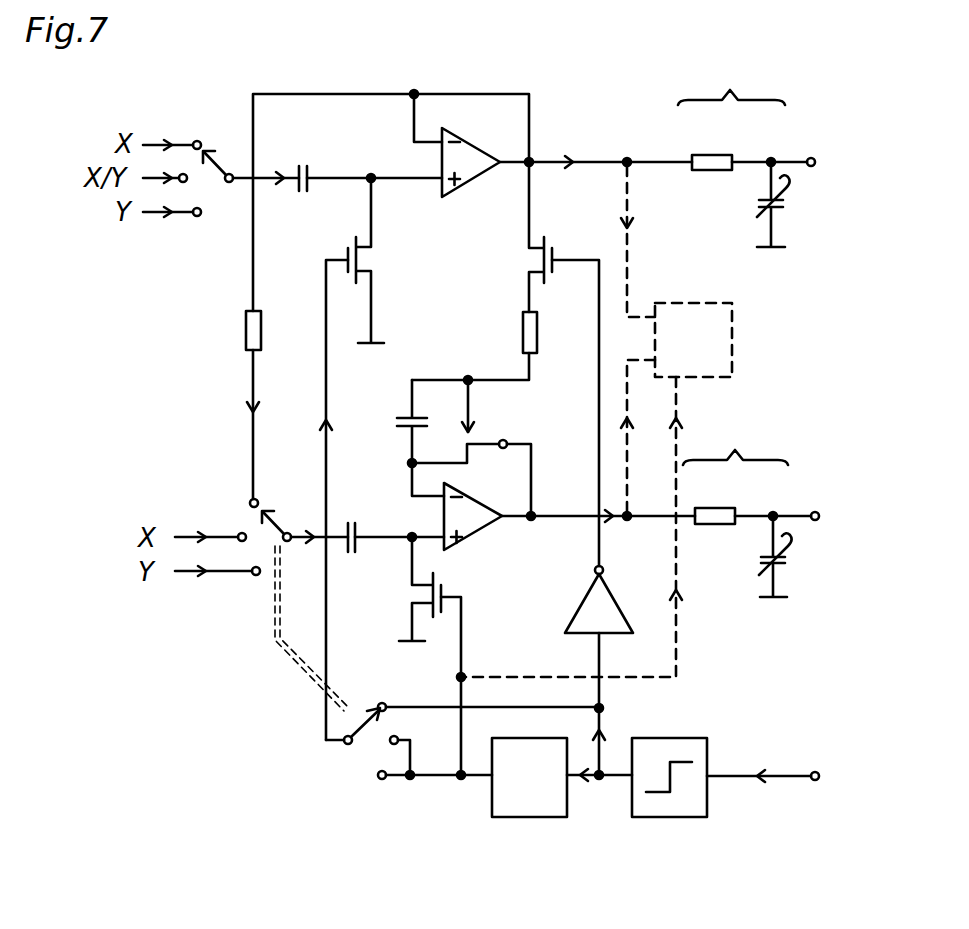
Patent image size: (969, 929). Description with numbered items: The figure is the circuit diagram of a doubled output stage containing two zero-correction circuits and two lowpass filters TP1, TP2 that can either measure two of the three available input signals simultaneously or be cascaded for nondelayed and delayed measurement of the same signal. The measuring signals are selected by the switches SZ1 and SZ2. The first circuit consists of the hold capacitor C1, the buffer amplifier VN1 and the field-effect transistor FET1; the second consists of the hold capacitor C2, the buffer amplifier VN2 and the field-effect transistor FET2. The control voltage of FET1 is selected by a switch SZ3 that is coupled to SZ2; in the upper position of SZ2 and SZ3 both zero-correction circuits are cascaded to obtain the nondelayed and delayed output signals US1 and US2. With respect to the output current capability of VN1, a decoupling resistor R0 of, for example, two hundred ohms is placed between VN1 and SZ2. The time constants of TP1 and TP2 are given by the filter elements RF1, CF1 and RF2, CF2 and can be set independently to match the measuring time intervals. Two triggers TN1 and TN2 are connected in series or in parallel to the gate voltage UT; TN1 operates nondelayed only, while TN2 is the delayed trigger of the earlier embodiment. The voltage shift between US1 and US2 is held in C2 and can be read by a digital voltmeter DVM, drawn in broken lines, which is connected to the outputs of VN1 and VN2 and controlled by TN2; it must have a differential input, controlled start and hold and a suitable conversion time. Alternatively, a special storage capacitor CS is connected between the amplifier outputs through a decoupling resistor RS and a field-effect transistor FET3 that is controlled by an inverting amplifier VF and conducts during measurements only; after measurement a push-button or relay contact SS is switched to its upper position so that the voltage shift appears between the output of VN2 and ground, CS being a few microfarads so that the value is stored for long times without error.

The switch SZ1 is at (188, 159).
The switch SZ2 is at (233, 534).
The switch SZ3 is at (437, 666).
The hold capacitor C1 is at (337, 164).
The hold capacitor C2 is at (367, 522).
The storage capacitor CS is at (404, 438).
The push-button or relay contact SS is at (471, 448).
The decoupling resistor R0 is at (228, 332).
The decoupling resistor RS is at (474, 348).
The buffer amplifier VN1 is at (553, 145).
The buffer amplifier VN2 is at (569, 526).
The field-effect transistor FET1 is at (335, 459).
The field-effect transistor FET2 is at (460, 658).
The field-effect transistor FET3 is at (527, 364).
The inverting amplifier VF is at (605, 672).
The digital voltmeter DVM is at (598, 421).
The lowpass filter TP1 is at (731, 80).
The lowpass filter TP2 is at (735, 439).
The filter resistor RF1 is at (746, 142).
The filter resistor RF2 is at (752, 498).
The filter capacitor CF1 is at (793, 204).
The filter capacitor CF2 is at (794, 556).
The output signal US1 is at (839, 517).
The output signal US2 is at (836, 163).
The trigger TN1 is at (721, 797).
The trigger TN2 is at (544, 795).
The gate voltage UT is at (834, 777).